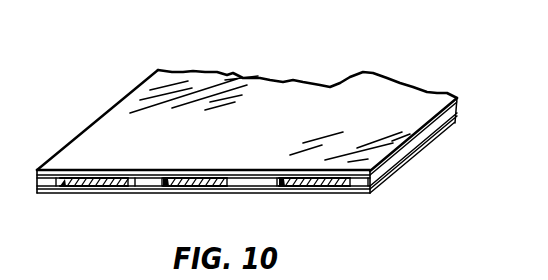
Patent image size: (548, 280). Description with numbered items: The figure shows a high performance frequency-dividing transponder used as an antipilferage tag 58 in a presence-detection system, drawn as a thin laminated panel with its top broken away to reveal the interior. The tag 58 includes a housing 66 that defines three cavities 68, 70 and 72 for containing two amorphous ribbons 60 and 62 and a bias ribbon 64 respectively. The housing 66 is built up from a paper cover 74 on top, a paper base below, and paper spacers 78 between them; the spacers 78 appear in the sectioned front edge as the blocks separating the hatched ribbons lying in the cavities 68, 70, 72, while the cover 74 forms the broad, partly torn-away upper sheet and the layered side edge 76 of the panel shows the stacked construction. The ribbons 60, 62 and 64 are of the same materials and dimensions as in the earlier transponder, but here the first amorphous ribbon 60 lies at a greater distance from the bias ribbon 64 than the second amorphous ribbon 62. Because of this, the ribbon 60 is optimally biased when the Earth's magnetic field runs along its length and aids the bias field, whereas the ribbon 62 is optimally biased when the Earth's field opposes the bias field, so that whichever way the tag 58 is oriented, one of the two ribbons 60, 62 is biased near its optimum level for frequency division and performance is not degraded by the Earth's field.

The antipilferage tag 58 is at (116, 90).
The amorphous ribbon 60 is at (331, 186).
The amorphous ribbon 62 is at (108, 186).
The bias ribbon 64 is at (213, 186).
The housing 66 is at (78, 142).
The cavity 68 is at (277, 186).
The cavity 70 is at (56, 194).
The cavity 72 is at (162, 186).
The paper cover 74 is at (294, 82).
The side edge of panel 76 is at (404, 170).
The paper spacers 78 is at (37, 181).